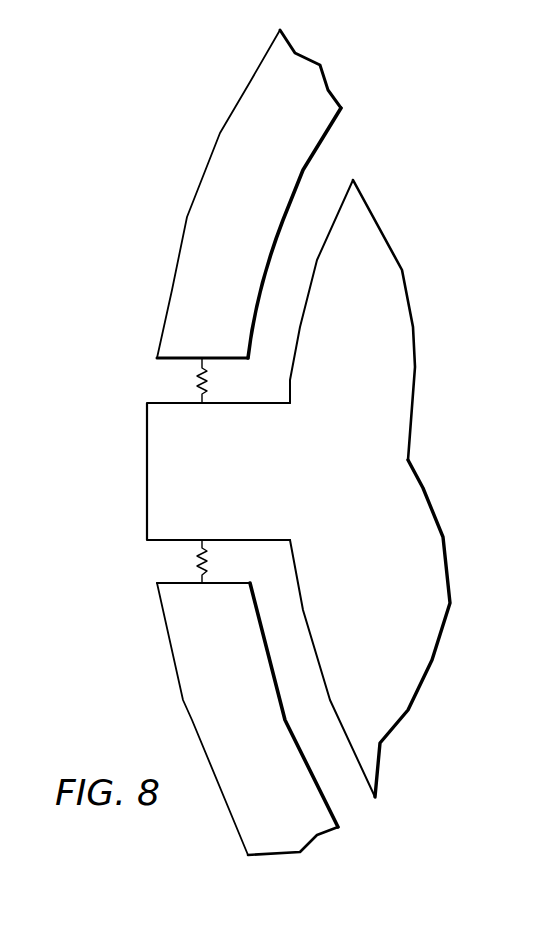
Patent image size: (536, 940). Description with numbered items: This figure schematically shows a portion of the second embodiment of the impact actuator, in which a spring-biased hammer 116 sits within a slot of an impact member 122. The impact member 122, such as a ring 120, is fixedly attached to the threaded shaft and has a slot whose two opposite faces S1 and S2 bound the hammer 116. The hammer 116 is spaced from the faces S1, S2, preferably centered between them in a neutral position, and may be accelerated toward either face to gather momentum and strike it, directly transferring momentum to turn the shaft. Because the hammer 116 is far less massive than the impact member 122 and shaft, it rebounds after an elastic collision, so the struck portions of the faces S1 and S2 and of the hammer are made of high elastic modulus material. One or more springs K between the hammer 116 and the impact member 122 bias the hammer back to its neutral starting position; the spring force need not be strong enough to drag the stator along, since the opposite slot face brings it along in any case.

The hammer 116 is at (147, 472).
The ring 120 is at (223, 201).
The impact member 122 is at (187, 217).
The face of slot S1 is at (169, 583).
The face of slot S2 is at (176, 345).
The spring K is at (217, 380).